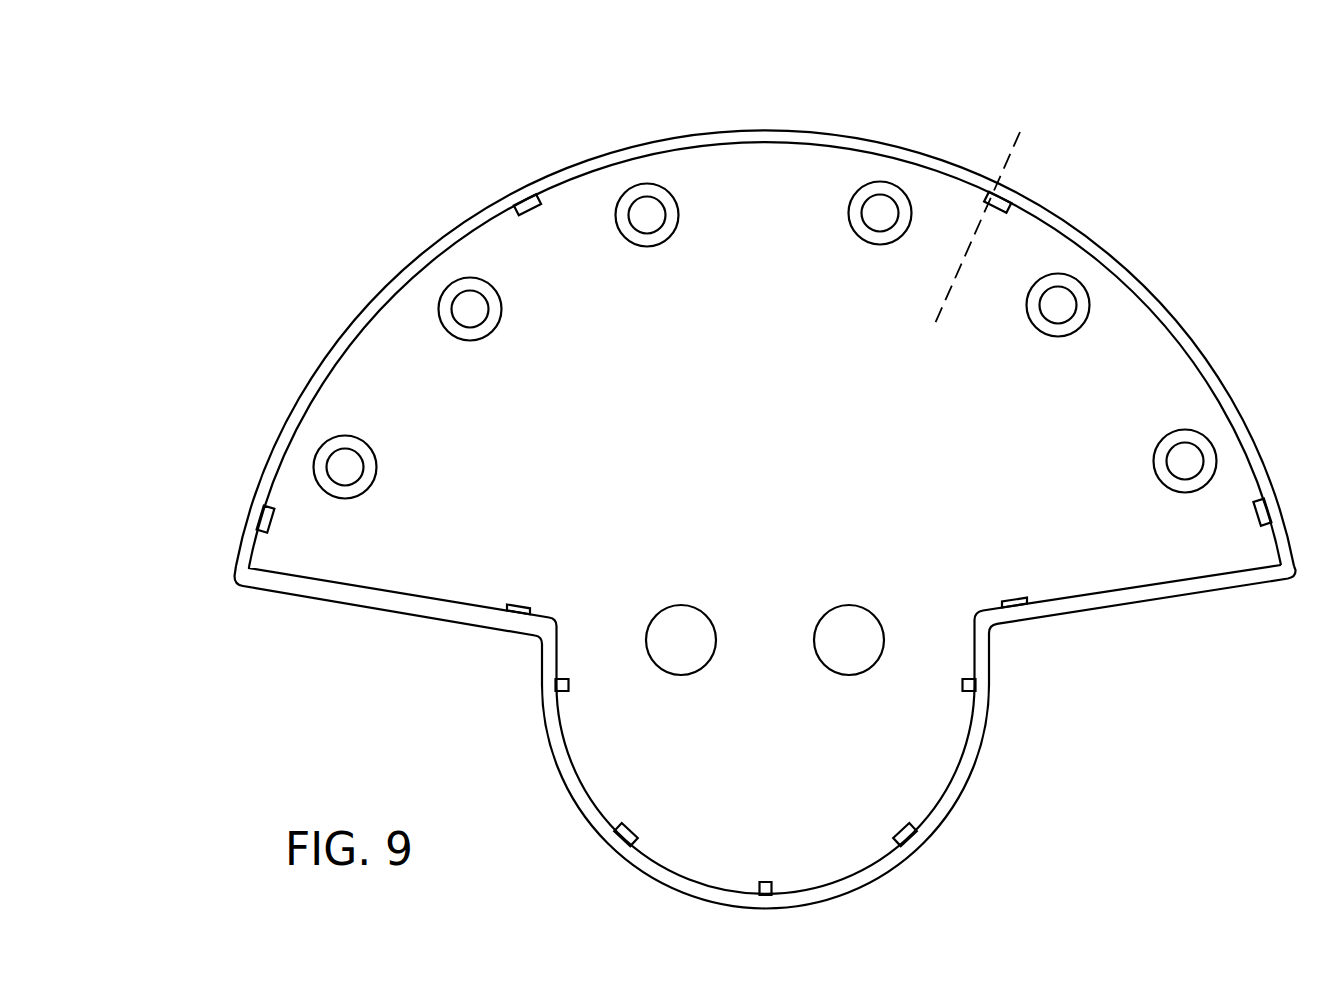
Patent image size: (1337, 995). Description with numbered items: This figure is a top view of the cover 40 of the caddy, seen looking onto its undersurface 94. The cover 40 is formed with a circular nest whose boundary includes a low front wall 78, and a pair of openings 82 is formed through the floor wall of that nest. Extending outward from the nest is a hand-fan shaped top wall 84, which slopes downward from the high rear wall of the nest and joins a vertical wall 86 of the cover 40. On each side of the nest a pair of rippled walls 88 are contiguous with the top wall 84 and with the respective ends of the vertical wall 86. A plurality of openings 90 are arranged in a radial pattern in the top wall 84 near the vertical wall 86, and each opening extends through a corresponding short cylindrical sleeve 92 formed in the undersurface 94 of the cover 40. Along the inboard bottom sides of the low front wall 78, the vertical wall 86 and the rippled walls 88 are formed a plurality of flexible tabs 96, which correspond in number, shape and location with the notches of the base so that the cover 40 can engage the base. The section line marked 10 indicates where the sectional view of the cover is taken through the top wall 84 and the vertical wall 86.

The section line 10- 10 is at (1020, 132).
The cover 40 is at (1118, 186).
The low front wall 78 is at (955, 793).
The openings 82 is at (656, 656).
The top wall 84 is at (1152, 341).
The vertical wall 86 is at (1258, 458).
The rippled walls 88 is at (337, 594).
The openings 90 is at (645, 200).
The short cylindrical sleeves 92 is at (640, 203).
The undersurface 94 is at (1135, 572).
The flexible tabs 96 is at (1270, 513).